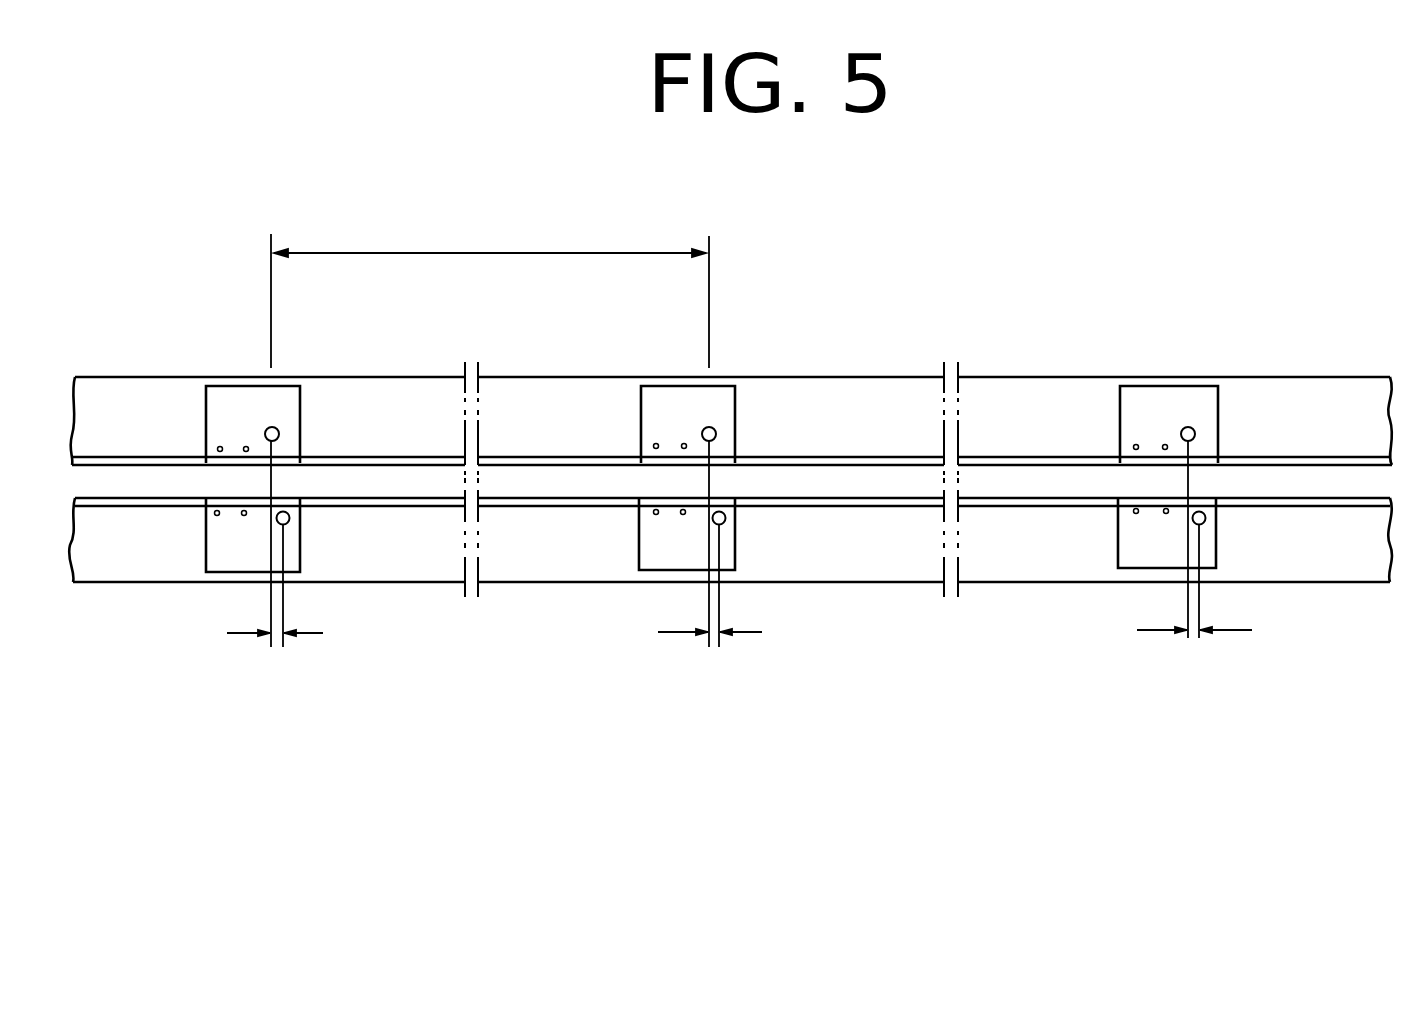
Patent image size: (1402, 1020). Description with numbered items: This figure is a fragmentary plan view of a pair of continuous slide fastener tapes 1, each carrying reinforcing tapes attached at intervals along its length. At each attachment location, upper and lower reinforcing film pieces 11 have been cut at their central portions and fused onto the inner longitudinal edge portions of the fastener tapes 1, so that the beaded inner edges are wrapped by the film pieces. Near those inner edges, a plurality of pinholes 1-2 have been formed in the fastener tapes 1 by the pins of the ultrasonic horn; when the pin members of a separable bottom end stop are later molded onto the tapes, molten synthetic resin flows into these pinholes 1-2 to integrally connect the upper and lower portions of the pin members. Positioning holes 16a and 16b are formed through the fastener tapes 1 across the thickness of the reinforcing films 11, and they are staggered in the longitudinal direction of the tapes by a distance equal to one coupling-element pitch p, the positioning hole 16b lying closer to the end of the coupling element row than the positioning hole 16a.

The fastener tape 1 is at (853, 405).
The pinholes 1-2 is at (220, 445).
The reinforcing film pieces 11 is at (242, 402).
The positioning hole 16a is at (288, 522).
The positioning hole 16b is at (274, 427).
The pitch p is at (739, 458).